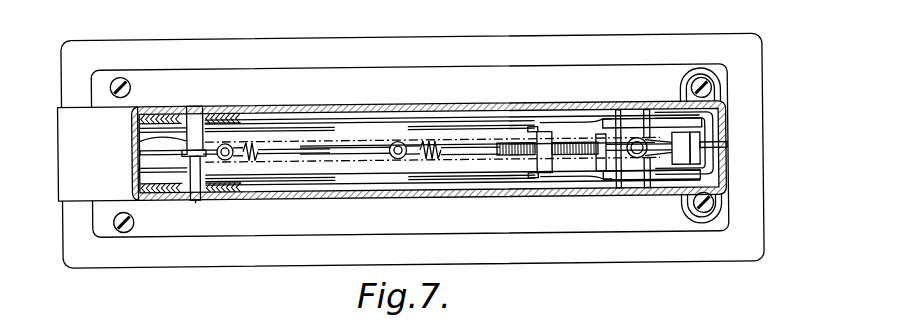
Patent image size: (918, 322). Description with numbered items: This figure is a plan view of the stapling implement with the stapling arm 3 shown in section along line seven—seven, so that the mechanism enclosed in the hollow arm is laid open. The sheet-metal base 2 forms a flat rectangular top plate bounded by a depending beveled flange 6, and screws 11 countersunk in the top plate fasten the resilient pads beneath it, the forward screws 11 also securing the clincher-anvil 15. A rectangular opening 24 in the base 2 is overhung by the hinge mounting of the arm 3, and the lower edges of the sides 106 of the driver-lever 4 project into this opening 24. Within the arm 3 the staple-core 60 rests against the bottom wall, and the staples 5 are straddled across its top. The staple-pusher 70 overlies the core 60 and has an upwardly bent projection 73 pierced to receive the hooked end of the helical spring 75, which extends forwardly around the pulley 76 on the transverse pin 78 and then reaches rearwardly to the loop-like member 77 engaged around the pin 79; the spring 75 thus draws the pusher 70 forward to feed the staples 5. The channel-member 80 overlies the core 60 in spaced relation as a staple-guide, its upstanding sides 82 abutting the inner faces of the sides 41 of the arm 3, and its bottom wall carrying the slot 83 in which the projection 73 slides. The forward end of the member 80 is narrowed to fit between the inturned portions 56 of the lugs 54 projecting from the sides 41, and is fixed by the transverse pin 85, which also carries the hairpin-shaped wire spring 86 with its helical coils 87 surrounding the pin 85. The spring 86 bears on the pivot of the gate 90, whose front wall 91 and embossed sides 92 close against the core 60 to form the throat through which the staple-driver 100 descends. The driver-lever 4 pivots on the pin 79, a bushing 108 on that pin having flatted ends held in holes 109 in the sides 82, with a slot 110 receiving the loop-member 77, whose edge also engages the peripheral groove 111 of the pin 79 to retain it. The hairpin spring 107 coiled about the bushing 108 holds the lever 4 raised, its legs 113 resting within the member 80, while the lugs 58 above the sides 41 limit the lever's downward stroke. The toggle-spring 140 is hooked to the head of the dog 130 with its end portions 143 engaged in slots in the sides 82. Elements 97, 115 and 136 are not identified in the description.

The base 2 is at (509, 37).
The stapling arm 3 is at (372, 104).
The driver-lever 4 is at (104, 145).
The staples 5 is at (500, 157).
The beveled flange 6 is at (250, 263).
The screws 11 is at (121, 74).
The clincher-anvil 15 is at (714, 196).
The rectangular opening 24 is at (136, 102).
The sides of the arm 41 is at (410, 118).
The lugs 54 is at (650, 140).
The inturned portions of lugs 56 is at (641, 124).
The lugs 58 is at (594, 128).
The staple-core 60 is at (318, 148).
The staple-pusher 70 is at (462, 158).
The projection 73 is at (390, 146).
The helical spring 75 is at (262, 158).
The pulley 76 is at (592, 176).
The loop-like member 77 is at (164, 154).
The transverse pin 78 is at (601, 176).
The pin 79 is at (195, 104).
The channel-member 80 is at (468, 118).
The sides of channel-member 82 is at (255, 121).
The slot 83 is at (152, 136).
The transverse pin 85 is at (535, 143).
The hairpin-shaped wire spring 86 is at (570, 160).
The helical coils 87 is at (546, 133).
The gate 90 is at (722, 107).
The front wall of gate 91 is at (712, 170).
The sides of gate 92 is at (681, 78).
The guide block 97 is at (699, 163).
The staple-driver 100 is at (706, 135).
The sides of driver-lever 106 is at (448, 106).
The hairpin spring 107 is at (290, 126).
The bushing 108 is at (236, 156).
The holes 109 is at (226, 112).
The slot 110 is at (178, 149).
The peripheral groove 111 is at (194, 198).
The legs of spring 113 is at (318, 184).
The end cover 115 is at (725, 180).
The dog 130 is at (650, 182).
The stop pin 136 is at (727, 148).
The toggle-spring 140 is at (678, 121).
The end portions of spring legs 143 is at (632, 124).